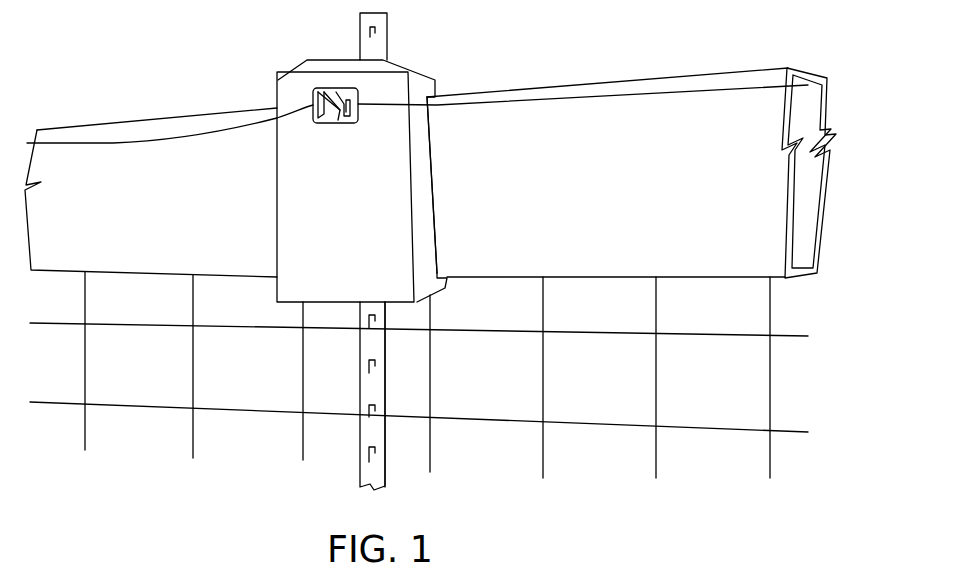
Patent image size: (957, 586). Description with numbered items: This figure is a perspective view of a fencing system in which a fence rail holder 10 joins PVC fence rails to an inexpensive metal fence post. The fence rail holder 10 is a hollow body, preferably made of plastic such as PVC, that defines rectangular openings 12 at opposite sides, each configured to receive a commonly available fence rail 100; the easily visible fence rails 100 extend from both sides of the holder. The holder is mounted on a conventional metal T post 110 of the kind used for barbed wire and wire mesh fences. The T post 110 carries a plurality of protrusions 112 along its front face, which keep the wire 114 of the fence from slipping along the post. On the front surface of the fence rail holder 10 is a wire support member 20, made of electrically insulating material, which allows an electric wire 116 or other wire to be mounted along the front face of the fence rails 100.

The fence rail holder 10 is at (403, 117).
The rectangular openings 12 is at (440, 205).
The wire support member 20 is at (338, 100).
The fence rail 100 is at (113, 170).
The metal T post 110 is at (373, 390).
The protrusions 112 is at (372, 388).
The wire 114 is at (248, 413).
The electric wire 116 is at (180, 137).